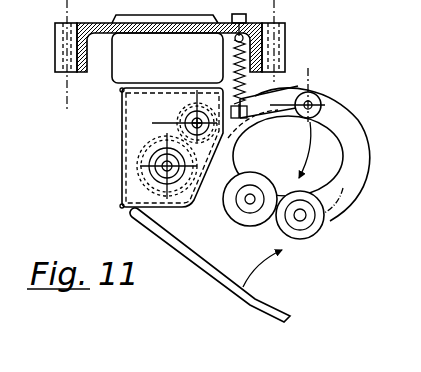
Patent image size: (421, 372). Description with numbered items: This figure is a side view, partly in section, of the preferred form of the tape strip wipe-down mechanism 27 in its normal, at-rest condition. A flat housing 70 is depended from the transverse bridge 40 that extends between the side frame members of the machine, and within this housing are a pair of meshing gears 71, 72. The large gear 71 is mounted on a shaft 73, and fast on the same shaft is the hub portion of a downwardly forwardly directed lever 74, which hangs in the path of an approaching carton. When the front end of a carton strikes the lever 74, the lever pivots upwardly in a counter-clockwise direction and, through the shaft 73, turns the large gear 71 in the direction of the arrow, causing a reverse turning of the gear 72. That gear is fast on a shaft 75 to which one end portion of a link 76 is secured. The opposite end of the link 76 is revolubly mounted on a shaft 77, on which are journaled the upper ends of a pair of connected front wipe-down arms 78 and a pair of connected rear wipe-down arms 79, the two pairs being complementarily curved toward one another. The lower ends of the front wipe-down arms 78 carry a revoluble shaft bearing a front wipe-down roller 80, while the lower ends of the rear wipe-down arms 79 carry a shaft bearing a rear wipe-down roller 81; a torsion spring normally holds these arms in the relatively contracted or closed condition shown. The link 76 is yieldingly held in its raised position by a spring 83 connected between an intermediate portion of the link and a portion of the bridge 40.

The tape strip wipe-down mechanism 27 is at (117, 124).
The transverse bridge 40 is at (143, 39).
The flat housing 70 is at (140, 108).
The large gear 71 is at (143, 188).
The gear 72 is at (180, 107).
The shaft 73 is at (150, 163).
The lever 74 is at (148, 232).
The shaft 75 is at (196, 110).
The link 76 is at (256, 124).
The shaft 77 is at (312, 93).
The front wipe-down arms 78 is at (357, 158).
The rear wipe-down arms 79 is at (233, 157).
The front wipe-down roller 80 is at (312, 232).
The rear wipe-down roller 81 is at (240, 226).
The spring 83 is at (248, 74).